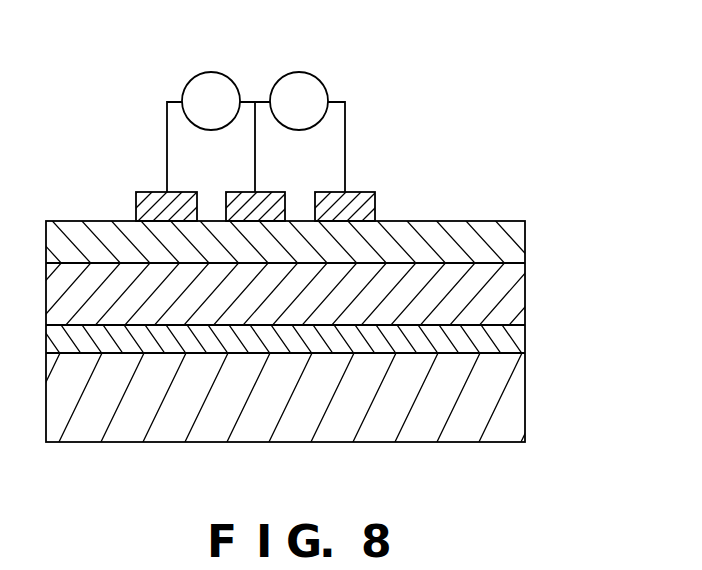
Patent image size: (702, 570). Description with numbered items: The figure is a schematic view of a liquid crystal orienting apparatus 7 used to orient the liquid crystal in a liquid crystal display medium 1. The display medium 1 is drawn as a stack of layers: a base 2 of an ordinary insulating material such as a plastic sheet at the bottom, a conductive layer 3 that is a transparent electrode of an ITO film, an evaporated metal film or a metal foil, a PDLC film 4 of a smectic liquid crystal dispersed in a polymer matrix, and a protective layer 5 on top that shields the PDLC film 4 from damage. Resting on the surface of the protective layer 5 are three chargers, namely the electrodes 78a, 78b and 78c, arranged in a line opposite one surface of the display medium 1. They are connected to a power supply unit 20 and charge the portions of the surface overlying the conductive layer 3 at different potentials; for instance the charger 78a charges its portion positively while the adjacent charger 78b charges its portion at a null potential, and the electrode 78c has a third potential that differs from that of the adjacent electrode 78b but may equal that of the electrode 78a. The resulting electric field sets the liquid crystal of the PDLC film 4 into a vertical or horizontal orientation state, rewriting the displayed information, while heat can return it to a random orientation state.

The liquid crystal display medium 1 is at (301, 294).
The base 2 is at (309, 397).
The conductive layer 3 is at (525, 342).
The PDLC film 4 is at (525, 295).
The protective layer 5 is at (525, 250).
The liquid crystal orienting apparatus 7 is at (293, 99).
The power supply unit 20 is at (287, 73).
The charger 78a is at (139, 192).
The charger 78b is at (242, 191).
The electrode 78c is at (367, 192).